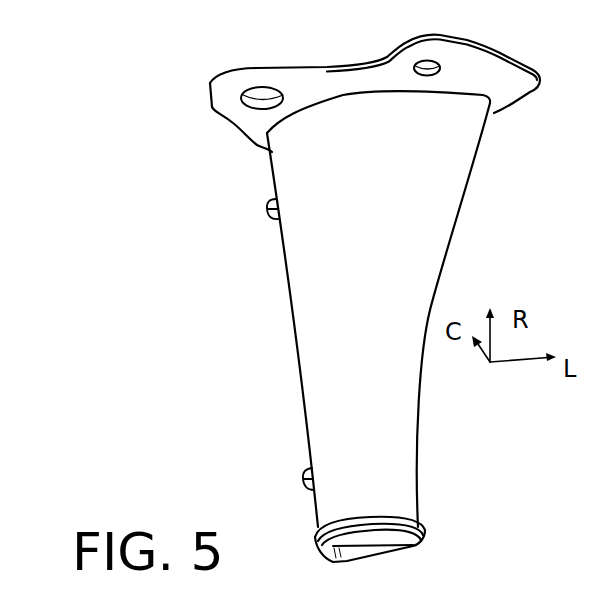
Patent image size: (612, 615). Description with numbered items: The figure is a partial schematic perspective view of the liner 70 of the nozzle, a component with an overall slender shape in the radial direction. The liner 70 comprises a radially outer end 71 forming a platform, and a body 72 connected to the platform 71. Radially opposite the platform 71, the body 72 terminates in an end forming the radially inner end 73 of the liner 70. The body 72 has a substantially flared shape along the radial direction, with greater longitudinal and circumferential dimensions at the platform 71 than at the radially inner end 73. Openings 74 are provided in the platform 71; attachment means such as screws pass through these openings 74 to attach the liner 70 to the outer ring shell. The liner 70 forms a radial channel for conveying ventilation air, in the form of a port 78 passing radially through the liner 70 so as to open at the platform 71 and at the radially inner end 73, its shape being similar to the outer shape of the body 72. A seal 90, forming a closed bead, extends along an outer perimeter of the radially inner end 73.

The liner 70 is at (95, 177).
The radially outer end 71 is at (223, 105).
The body 72 is at (323, 348).
The radially inner end 73 is at (298, 532).
The openings 74 is at (427, 65).
The port 78 is at (374, 556).
The seal 90 is at (430, 535).